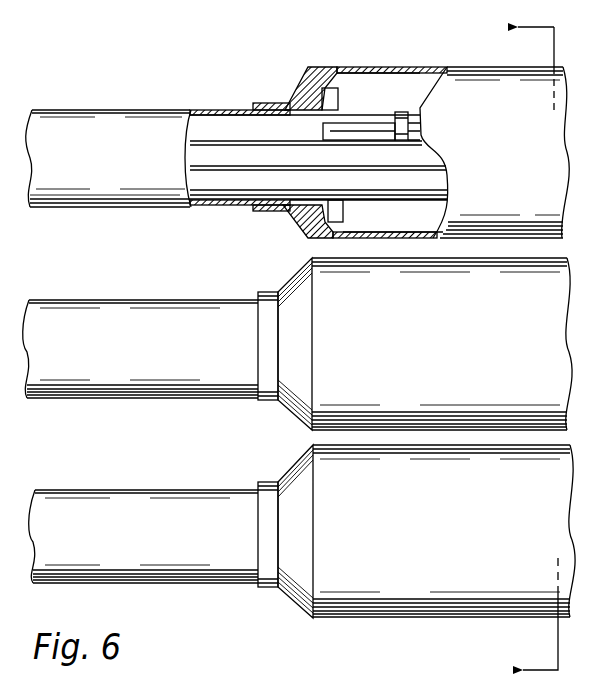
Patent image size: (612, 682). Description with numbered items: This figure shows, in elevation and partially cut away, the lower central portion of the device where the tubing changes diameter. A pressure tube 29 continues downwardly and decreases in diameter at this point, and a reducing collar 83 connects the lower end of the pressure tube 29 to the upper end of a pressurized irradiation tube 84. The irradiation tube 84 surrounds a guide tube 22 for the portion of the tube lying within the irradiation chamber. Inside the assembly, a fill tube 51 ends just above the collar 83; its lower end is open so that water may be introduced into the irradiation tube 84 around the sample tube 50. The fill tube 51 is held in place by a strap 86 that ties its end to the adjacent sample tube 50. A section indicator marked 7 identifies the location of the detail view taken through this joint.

The pressurized irradiation tube 84 is at (100, 110).
The reducing collar 83 is at (302, 91).
The pressure tube 29 is at (473, 66).
The sample tube 50 is at (352, 113).
The fill tube 51 is at (372, 121).
The strap 86 is at (400, 112).
The guide tube 22 is at (373, 210).
The section line for FIG. 7 is at (528, 349).